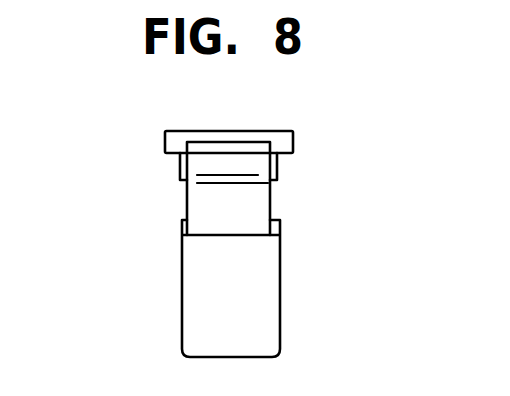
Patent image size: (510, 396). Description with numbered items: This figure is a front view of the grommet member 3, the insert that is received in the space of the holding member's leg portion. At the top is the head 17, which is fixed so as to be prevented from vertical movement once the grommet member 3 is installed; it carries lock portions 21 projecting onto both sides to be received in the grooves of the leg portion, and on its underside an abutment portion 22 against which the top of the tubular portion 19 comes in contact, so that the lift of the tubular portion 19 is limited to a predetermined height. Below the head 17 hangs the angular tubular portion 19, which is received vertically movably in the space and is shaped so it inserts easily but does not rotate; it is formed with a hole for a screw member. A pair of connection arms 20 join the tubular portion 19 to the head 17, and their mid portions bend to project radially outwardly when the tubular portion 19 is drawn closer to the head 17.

The grommet member 3 is at (334, 130).
The head 17 is at (165, 142).
The tubular portion 19 is at (188, 275).
The connection arms 20 is at (194, 205).
The lock portions 21 is at (293, 143).
The abutment portion 22 is at (278, 168).